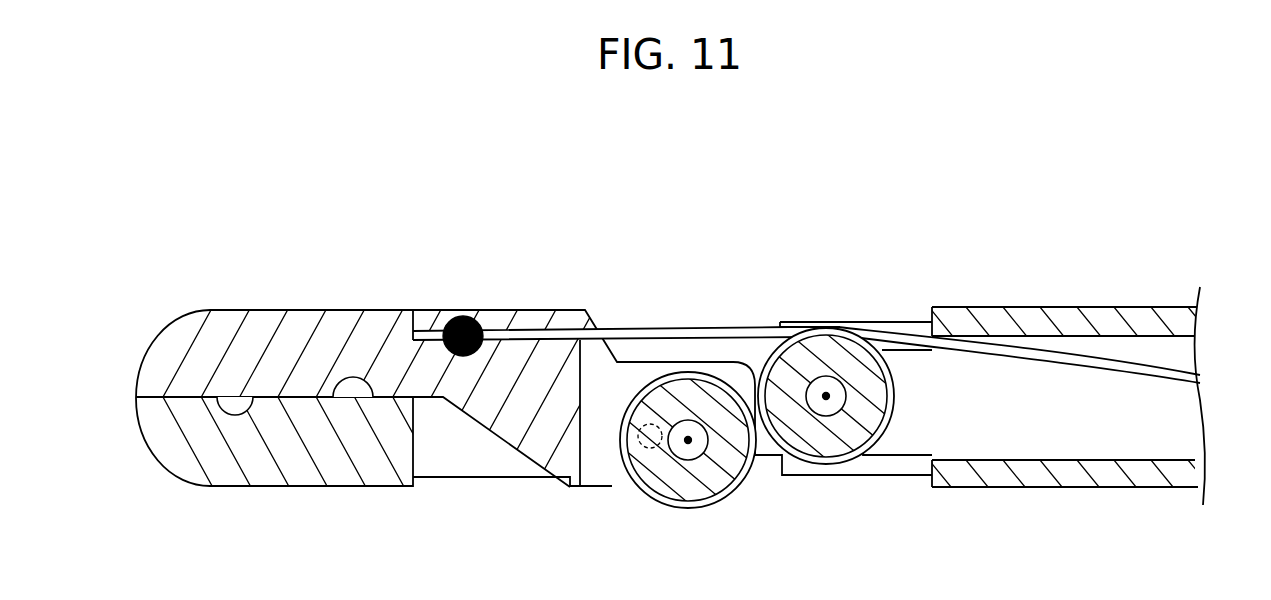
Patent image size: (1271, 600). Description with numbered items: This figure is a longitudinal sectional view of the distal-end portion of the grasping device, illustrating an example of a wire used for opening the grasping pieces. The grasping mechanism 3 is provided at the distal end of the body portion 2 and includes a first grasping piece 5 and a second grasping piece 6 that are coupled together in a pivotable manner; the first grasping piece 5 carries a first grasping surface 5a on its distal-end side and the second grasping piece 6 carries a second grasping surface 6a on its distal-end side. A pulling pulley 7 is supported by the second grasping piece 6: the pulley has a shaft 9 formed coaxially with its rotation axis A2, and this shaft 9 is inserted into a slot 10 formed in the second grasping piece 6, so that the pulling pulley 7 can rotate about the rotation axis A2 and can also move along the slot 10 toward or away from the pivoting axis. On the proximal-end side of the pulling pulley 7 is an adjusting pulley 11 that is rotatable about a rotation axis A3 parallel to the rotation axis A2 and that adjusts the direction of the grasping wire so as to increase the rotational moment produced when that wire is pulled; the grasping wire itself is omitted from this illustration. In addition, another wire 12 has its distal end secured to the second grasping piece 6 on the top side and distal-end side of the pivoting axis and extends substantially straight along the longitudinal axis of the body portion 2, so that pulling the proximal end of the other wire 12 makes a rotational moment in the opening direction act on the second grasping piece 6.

The body portion 2 is at (1081, 307).
The grasping mechanism 3 is at (150, 202).
The first grasping piece 5 is at (260, 488).
The first grasping surface 5a is at (365, 398).
The second grasping piece 6 is at (318, 310).
The second grasping surface 6a is at (250, 397).
The pulling pulley 7 is at (727, 486).
The shaft 9 is at (688, 460).
The slot 10 is at (677, 390).
The adjusting pulley 11 is at (837, 462).
The other wire 12 is at (904, 322).
The rotation axis of the pulling pulley A2 is at (688, 437).
The rotation axis of the adjusting pulley A3 is at (826, 393).